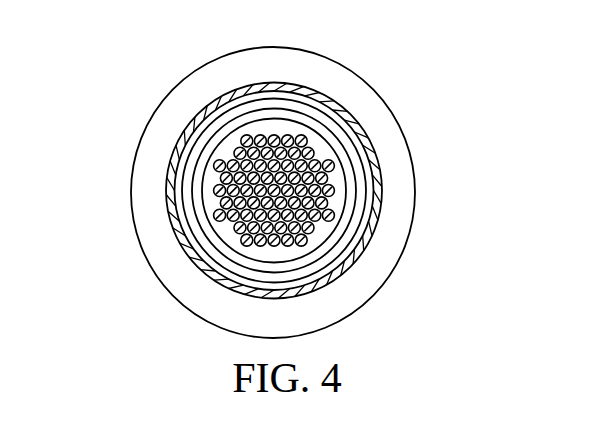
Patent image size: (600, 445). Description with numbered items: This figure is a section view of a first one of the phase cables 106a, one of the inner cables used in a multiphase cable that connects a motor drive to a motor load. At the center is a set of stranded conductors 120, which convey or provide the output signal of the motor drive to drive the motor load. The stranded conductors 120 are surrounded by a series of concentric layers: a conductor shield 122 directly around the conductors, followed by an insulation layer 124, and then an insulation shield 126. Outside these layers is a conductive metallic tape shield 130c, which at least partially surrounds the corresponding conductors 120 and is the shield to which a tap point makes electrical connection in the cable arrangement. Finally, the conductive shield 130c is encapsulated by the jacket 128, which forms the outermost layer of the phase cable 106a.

The phase cable 106a is at (124, 73).
The stranded conductors 120 is at (338, 178).
The conductor shield 122 is at (328, 144).
The insulation layer 124 is at (311, 118).
The insulation shield 126 is at (293, 100).
The jacket 128 is at (275, 47).
The conductive metallic tape shield 130c is at (237, 90).